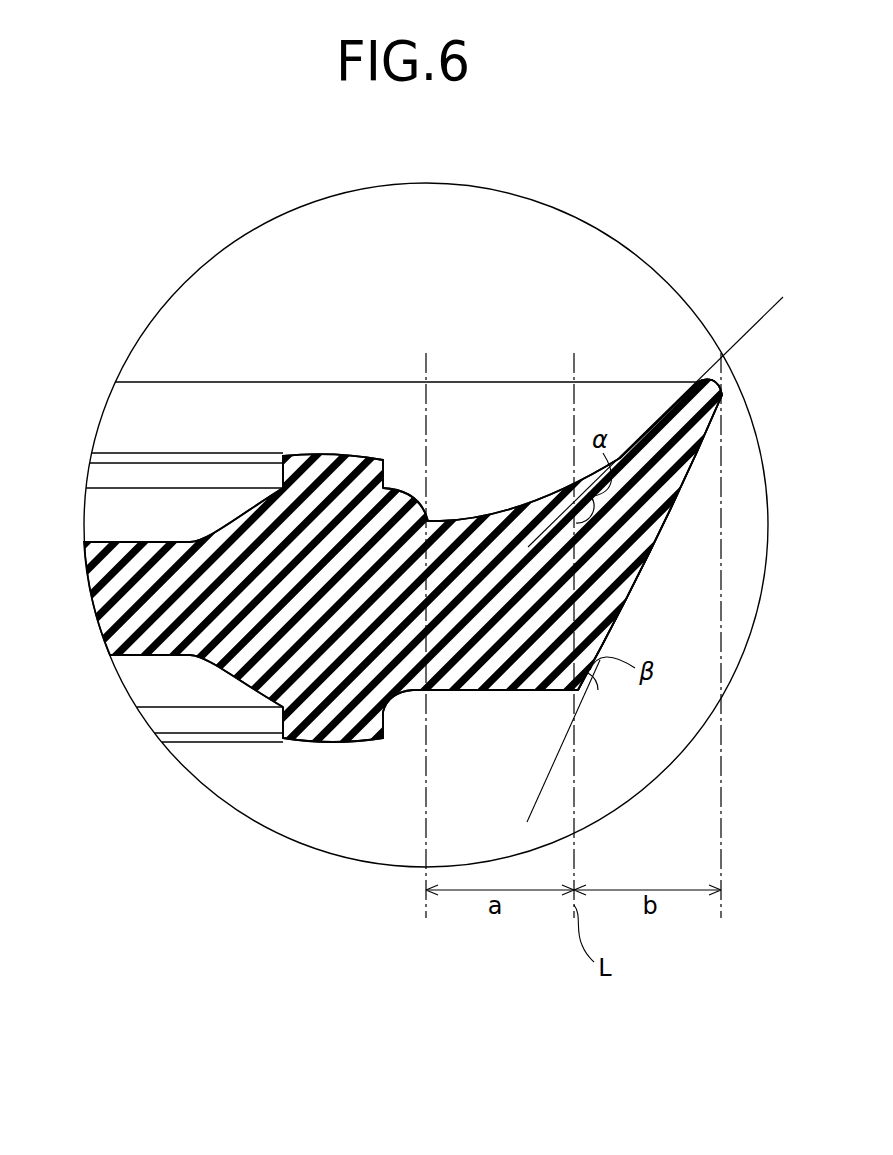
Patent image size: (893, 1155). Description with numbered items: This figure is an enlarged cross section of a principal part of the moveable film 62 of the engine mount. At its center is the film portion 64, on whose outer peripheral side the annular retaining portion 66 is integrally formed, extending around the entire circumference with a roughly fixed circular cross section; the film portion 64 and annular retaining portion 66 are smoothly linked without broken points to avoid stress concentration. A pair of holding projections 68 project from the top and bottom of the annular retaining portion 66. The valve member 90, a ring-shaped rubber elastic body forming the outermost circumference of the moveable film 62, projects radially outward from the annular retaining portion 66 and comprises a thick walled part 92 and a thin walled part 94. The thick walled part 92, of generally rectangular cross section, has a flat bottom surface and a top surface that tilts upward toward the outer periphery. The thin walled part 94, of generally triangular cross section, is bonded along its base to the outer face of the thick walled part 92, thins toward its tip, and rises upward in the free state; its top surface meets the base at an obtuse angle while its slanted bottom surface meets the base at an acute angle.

The moveable film 62 is at (510, 353).
The film portion 64 is at (115, 562).
The annular retaining portion 66 is at (330, 613).
The holding projections 68 is at (333, 470).
The valve member 90 is at (778, 715).
The thick walled part 92 is at (500, 653).
The thin walled part 94 is at (628, 520).